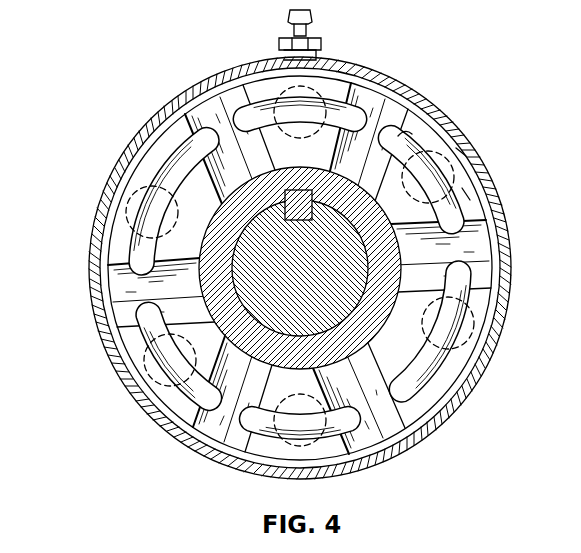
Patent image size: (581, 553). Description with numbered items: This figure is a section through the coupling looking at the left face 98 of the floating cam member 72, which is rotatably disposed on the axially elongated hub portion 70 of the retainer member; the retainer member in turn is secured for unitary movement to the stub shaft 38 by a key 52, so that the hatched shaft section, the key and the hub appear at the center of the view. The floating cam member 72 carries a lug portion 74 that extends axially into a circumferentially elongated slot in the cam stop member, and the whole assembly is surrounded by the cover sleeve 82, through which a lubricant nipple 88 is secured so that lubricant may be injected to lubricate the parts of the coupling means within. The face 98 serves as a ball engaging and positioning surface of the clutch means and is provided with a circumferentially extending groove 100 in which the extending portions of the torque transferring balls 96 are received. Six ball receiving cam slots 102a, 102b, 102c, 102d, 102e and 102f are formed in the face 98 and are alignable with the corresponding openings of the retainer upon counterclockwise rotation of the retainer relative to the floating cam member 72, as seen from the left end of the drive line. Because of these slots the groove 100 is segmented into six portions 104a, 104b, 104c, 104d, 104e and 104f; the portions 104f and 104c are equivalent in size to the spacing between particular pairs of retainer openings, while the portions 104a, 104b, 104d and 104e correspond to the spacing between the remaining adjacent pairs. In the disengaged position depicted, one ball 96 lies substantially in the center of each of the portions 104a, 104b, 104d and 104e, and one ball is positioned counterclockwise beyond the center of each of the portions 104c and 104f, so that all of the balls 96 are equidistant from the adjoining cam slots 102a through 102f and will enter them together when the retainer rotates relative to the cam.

The stub shaft 38 is at (316, 294).
The key 52 is at (313, 201).
The hub portion 70 is at (240, 270).
The floating cam member 72 is at (504, 297).
The lug portion 74 is at (328, 64).
The cover sleeve 82 is at (373, 76).
The lubricant nipple 88 is at (284, 22).
The ball 96 is at (464, 152).
The left face of the floating cam 98 is at (471, 195).
The circumferentially extending groove 100 is at (421, 150).
The ball receiving cam slot 102a is at (207, 112).
The ball receiving cam slot 102b is at (406, 122).
The ball receiving cam slot 102c is at (496, 236).
The ball receiving cam slot 102d is at (405, 412).
The ball receiving cam slot 102e is at (190, 425).
The ball receiving cam slot 102f is at (108, 276).
The groove portion 104a is at (256, 100).
The groove portion 104b is at (461, 206).
The groove portion 104c is at (446, 374).
The groove portion 104d is at (330, 440).
The groove portion 104e is at (151, 335).
The groove portion 104f is at (151, 178).